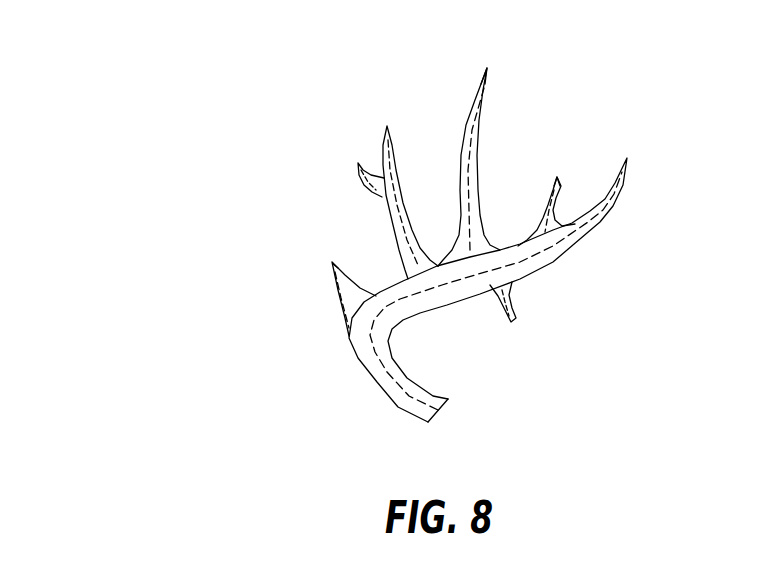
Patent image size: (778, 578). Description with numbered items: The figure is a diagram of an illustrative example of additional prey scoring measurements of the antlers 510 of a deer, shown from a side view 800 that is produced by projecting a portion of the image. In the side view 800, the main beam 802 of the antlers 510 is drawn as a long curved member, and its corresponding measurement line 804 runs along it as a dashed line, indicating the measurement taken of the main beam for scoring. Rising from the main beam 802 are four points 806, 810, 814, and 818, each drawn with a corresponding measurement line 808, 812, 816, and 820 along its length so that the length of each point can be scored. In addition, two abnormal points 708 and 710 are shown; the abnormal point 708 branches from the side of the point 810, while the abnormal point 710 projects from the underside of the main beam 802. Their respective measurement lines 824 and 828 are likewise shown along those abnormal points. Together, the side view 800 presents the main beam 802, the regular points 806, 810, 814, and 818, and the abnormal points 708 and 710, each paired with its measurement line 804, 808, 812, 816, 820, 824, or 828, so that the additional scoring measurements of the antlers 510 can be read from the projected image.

The side view 800 is at (153, 52).
The antlers 510 is at (394, 421).
The main beam 802 is at (353, 362).
The measurement line 804 is at (372, 336).
The point 806 is at (332, 262).
The measurement line 808 is at (337, 288).
The point 810 is at (387, 126).
The measurement line 812 is at (389, 148).
The abnormal point 708 is at (358, 163).
The measurement line 824 is at (376, 199).
The point 814 is at (487, 68).
The measurement line 816 is at (467, 110).
The point 818 is at (557, 176).
The measurement line 820 is at (552, 182).
The abnormal point 710 is at (514, 323).
The measurement line 828 is at (501, 311).